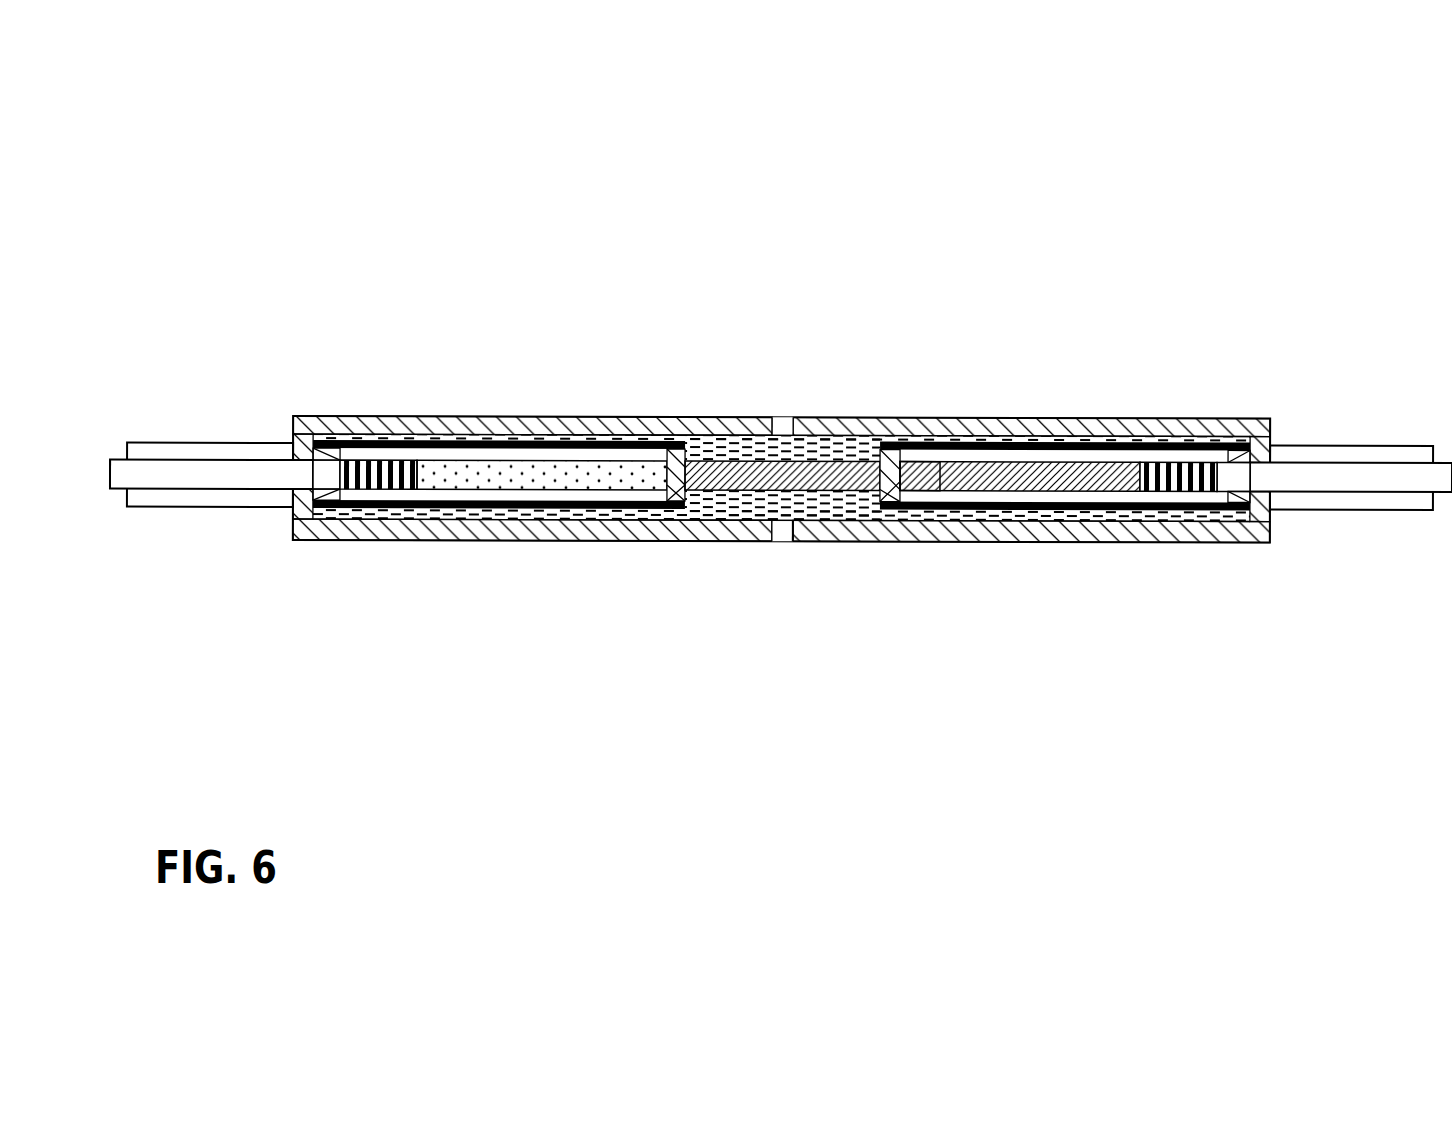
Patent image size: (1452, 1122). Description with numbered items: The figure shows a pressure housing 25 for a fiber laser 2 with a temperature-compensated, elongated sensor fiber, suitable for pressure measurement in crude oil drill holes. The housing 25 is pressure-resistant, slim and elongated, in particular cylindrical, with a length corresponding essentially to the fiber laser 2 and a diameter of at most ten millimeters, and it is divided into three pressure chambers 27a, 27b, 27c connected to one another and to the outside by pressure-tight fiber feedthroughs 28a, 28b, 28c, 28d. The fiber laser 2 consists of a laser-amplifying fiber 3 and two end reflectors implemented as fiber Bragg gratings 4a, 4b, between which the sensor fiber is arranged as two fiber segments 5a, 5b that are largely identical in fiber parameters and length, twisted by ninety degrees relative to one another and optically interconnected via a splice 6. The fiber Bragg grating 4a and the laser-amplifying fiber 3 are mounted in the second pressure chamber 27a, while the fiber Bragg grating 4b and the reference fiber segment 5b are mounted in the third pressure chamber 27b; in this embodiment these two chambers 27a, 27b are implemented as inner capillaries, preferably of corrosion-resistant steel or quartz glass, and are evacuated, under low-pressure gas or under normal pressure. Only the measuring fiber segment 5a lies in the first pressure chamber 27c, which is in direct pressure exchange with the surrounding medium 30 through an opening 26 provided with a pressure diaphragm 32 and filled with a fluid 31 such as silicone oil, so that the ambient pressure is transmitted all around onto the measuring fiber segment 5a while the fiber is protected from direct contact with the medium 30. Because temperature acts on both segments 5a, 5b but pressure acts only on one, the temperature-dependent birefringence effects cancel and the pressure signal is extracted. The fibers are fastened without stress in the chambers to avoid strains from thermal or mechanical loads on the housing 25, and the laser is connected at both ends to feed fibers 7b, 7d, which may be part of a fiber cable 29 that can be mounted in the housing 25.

The fiber laser 2 is at (266, 156).
The laser-amplifying fiber 3 is at (518, 477).
The fiber Bragg grating 4a is at (367, 476).
The fiber Bragg grating 4b is at (1198, 460).
The fiber segment 5a is at (832, 477).
The fiber segment 5b is at (955, 477).
The splice 6 is at (917, 473).
The feed fiber 7b is at (195, 477).
The feed fiber 7d is at (1312, 482).
The pressure housing 25 is at (425, 423).
The opening 26 is at (782, 423).
The second pressure chamber 27a is at (393, 508).
The third pressure chamber 27b is at (998, 508).
The first pressure chamber 27c is at (838, 509).
The fiber feedthrough 28a is at (318, 497).
The fiber feedthrough 28b is at (670, 495).
The fiber feedthrough 28c is at (885, 497).
The fiber feedthrough 28d is at (1233, 498).
The fiber cable 29 is at (200, 505).
The medium 30 is at (140, 372).
The fluid 31 is at (855, 447).
The pressure diaphragm 32 is at (792, 540).